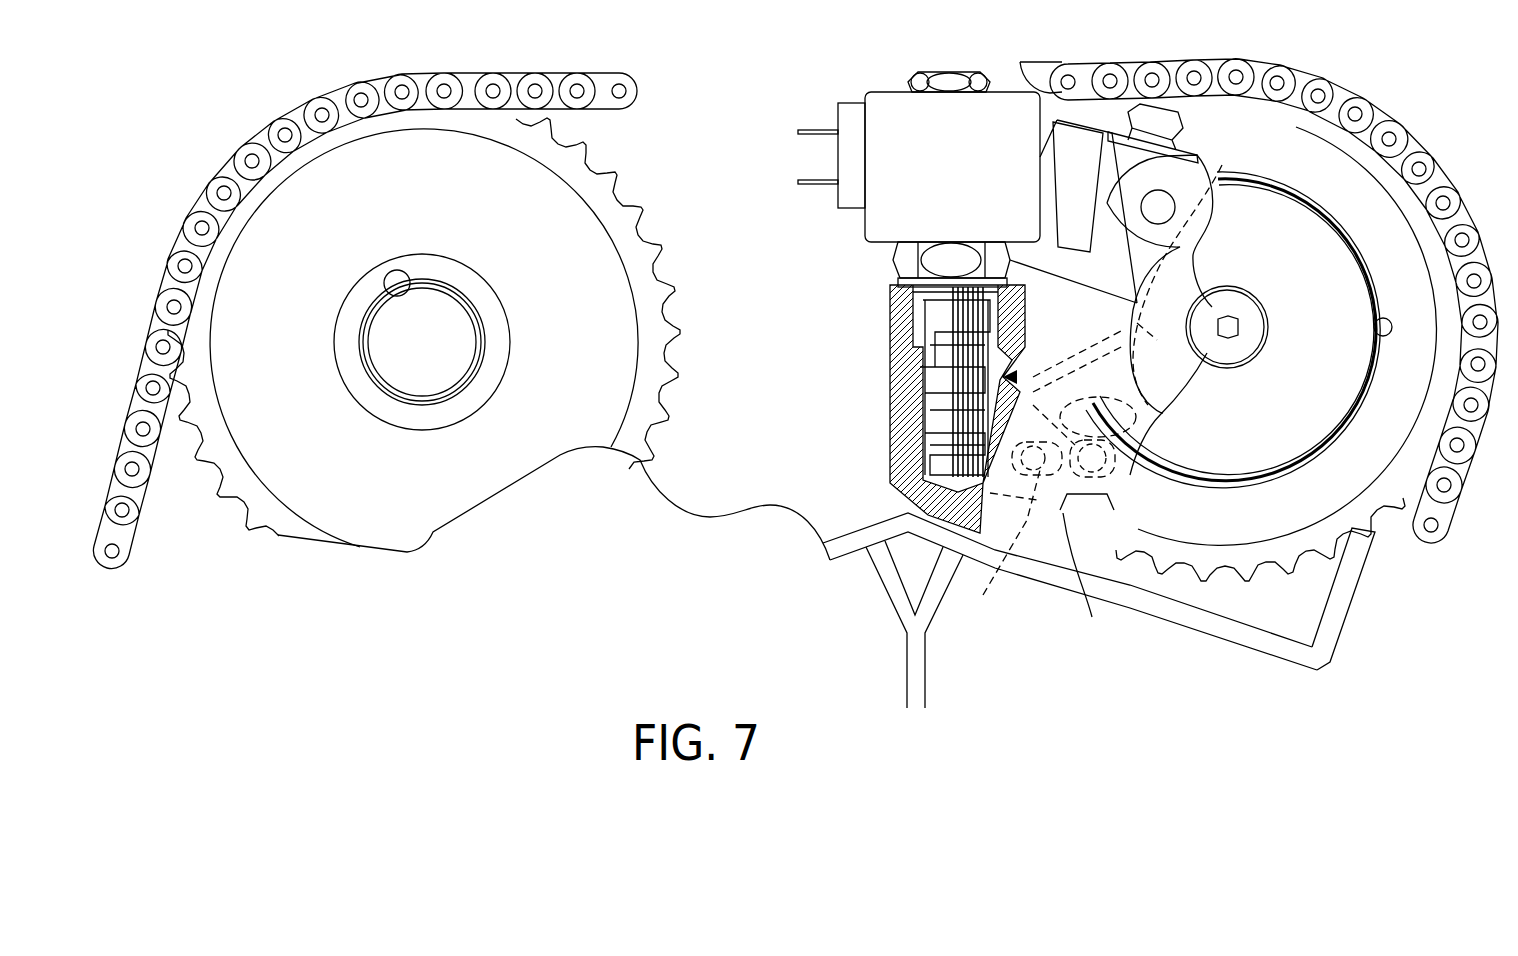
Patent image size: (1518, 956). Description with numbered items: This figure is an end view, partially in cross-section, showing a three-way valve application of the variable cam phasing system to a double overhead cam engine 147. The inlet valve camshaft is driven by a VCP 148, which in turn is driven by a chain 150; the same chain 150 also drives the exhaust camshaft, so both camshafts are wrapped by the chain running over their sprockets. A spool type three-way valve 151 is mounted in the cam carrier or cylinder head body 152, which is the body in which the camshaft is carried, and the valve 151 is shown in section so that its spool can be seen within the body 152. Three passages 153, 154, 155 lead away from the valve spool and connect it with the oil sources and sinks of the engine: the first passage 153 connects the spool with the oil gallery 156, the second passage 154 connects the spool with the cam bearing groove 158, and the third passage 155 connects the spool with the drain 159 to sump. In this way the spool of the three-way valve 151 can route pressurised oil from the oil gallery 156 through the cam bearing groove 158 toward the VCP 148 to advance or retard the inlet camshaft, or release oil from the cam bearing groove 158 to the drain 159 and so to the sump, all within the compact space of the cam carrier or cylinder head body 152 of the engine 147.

The double overhead cam (DOHC) engine 147 is at (1278, 55).
The VCP 148 is at (1340, 220).
The chain 150 is at (1442, 452).
The spool type three-way valve 151 is at (905, 314).
The cam carrier or cylinder head body 152 is at (890, 360).
The passage 153 is at (1155, 418).
The passage 154 is at (1087, 352).
The passage 155 is at (998, 550).
The oil gallery 156 is at (1113, 472).
The cam bearing groove 158 is at (1222, 165).
The drain 159 is at (1092, 584).